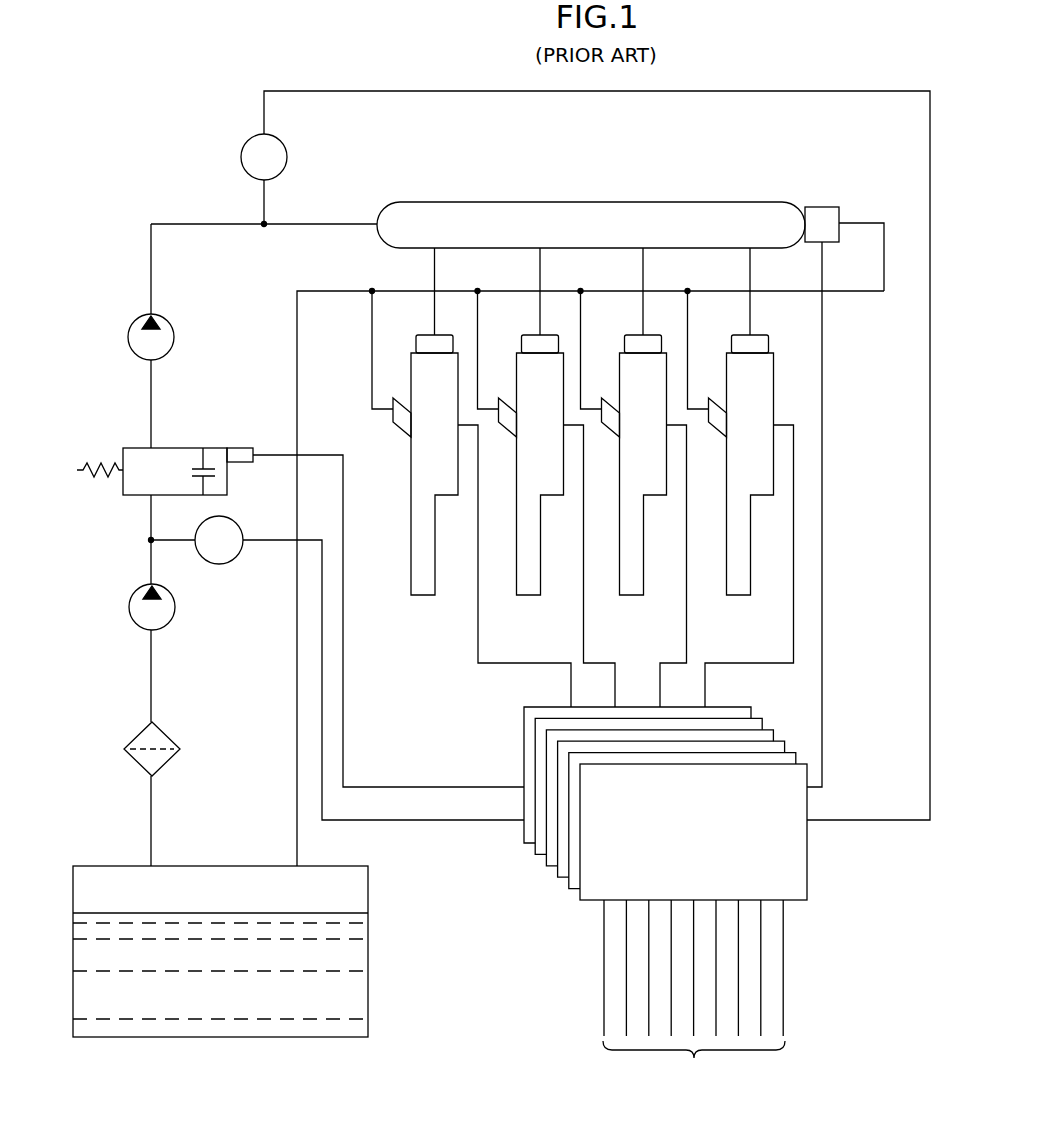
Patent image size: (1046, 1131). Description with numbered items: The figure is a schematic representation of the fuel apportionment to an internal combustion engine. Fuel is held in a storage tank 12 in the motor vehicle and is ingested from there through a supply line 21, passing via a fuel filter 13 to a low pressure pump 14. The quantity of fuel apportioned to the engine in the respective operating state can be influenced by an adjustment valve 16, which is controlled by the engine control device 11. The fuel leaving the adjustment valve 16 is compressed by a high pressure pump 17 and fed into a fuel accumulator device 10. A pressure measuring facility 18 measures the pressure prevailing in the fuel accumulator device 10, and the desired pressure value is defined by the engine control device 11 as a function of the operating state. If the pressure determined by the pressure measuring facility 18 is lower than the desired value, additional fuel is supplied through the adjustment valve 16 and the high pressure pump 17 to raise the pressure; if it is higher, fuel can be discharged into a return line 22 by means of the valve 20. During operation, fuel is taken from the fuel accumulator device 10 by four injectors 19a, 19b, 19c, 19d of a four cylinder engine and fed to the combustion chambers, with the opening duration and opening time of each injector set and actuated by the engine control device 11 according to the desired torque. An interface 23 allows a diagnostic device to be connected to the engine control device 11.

The fuel accumulator device 10 is at (591, 201).
The engine control device 11 is at (665, 803).
The storage tank 12 is at (222, 1038).
The fuel filter 13 is at (141, 766).
The low pressure pump 14 is at (130, 607).
The adjustment valve 16 is at (122, 456).
The high pressure pump 17 is at (128, 337).
The pressure measuring facility 18 is at (241, 157).
The injector 19a is at (420, 597).
The injector 19b is at (528, 597).
The injector 19c is at (630, 597).
The injector 19d is at (738, 597).
The valve 20 is at (832, 206).
The supply line 21 is at (148, 271).
The return line 22 is at (296, 372).
The interface 23 is at (694, 998).